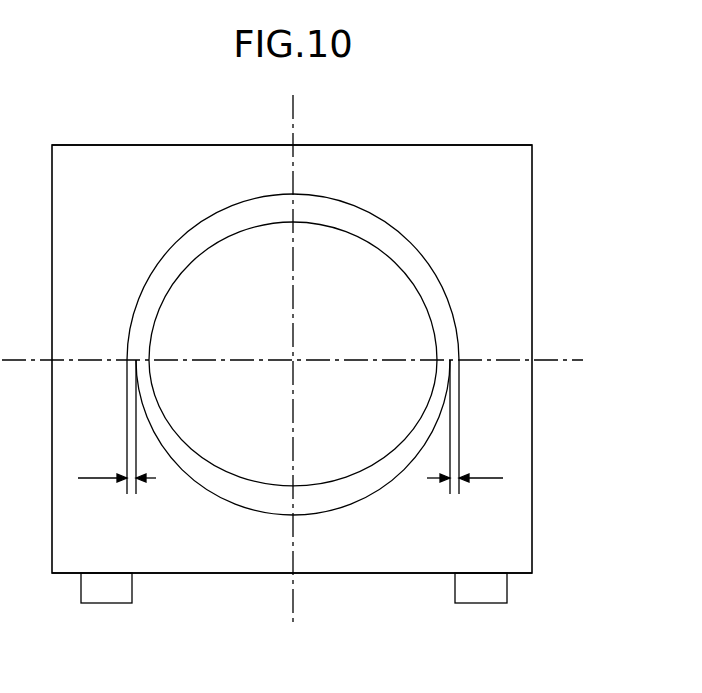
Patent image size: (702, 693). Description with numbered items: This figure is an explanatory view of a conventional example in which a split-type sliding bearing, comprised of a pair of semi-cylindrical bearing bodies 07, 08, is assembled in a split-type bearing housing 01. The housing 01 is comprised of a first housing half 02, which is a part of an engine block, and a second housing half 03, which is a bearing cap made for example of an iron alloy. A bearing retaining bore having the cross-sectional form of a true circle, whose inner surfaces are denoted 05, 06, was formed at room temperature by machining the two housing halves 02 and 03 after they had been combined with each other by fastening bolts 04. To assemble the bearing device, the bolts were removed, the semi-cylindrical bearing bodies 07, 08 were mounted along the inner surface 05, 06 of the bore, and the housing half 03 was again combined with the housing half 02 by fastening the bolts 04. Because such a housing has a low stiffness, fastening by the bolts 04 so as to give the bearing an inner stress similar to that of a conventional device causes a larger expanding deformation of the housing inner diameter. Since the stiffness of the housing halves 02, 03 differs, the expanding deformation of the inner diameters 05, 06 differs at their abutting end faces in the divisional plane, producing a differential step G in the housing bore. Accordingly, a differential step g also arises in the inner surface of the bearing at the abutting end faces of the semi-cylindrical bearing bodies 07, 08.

The split-type bearing housing 01 is at (419, 124).
The first housing half 02 is at (522, 252).
The second housing half 03 is at (522, 521).
The fastening bolts 04 is at (106, 597).
The inner surface of bearing retaining bore in first housing half 05 is at (281, 355).
The inner surface of bearing retaining bore in second housing half 06 is at (215, 482).
The semi-cylindrical bearing body 07 is at (378, 232).
The semi-cylindrical bearing body 08 is at (379, 480).
The differential step in bearing inner surface g is at (150, 359).
The differential step in housing bore G is at (290, 464).